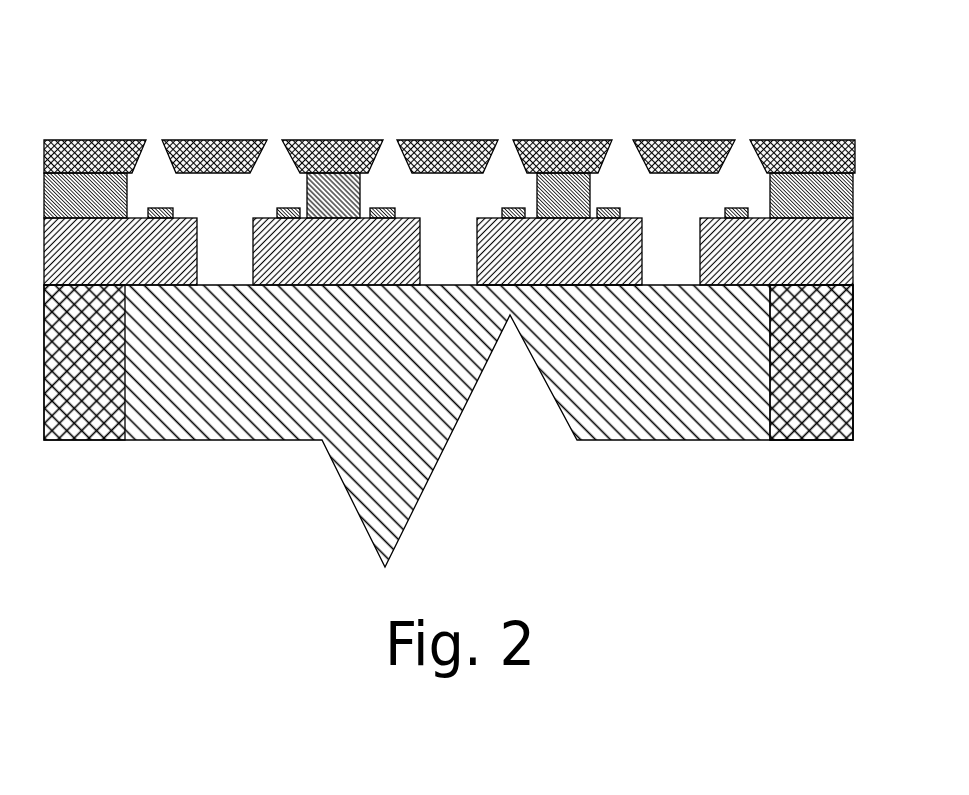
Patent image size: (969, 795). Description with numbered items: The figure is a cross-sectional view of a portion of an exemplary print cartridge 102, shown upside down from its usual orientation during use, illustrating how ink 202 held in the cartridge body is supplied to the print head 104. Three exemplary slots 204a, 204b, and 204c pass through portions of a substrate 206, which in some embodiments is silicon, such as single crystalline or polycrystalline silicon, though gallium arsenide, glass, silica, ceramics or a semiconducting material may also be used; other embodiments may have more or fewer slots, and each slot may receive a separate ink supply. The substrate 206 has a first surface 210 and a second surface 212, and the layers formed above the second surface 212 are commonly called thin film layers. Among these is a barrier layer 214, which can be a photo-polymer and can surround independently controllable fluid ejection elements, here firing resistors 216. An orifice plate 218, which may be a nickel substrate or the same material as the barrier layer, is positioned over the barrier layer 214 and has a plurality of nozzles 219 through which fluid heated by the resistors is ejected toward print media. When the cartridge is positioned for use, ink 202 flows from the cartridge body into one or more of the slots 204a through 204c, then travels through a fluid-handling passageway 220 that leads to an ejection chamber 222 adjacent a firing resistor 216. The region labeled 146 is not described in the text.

The print cartridge 102 is at (586, 30).
The print head 104 is at (598, 135).
The isolation region 146 is at (826, 406).
The ink 202 is at (247, 411).
The slot 204a is at (699, 268).
The slot 204b is at (475, 268).
The slot 204c is at (252, 268).
The substrate 206 is at (130, 265).
The first surface 210 is at (639, 212).
The second surface 212 is at (589, 296).
The barrier layer 214 is at (106, 204).
The firing resistor 216 is at (165, 207).
The orifice plate 218 is at (827, 169).
The nozzle 219 is at (154, 135).
The fluid-handling passageway 220 is at (413, 206).
The ejection chamber 222 is at (386, 187).